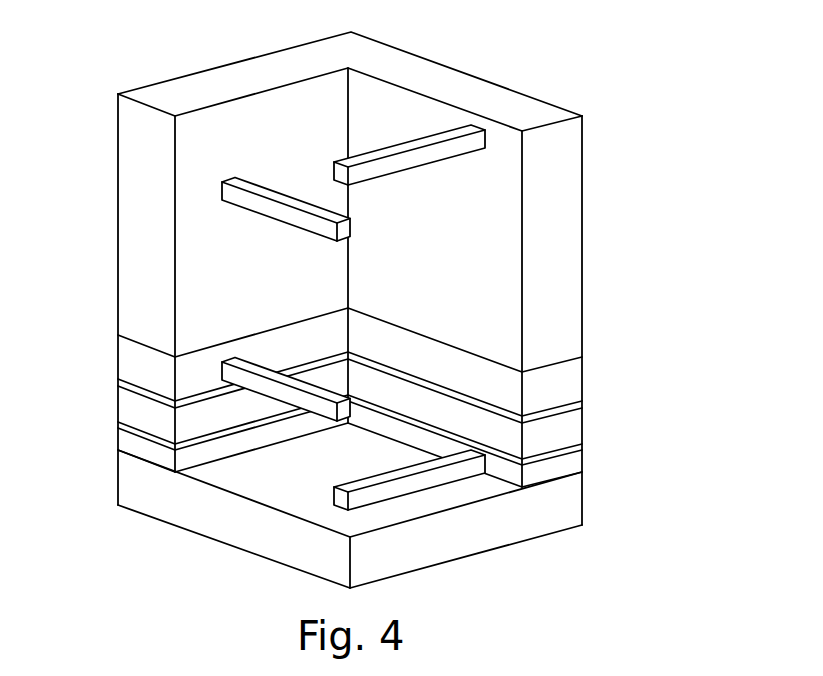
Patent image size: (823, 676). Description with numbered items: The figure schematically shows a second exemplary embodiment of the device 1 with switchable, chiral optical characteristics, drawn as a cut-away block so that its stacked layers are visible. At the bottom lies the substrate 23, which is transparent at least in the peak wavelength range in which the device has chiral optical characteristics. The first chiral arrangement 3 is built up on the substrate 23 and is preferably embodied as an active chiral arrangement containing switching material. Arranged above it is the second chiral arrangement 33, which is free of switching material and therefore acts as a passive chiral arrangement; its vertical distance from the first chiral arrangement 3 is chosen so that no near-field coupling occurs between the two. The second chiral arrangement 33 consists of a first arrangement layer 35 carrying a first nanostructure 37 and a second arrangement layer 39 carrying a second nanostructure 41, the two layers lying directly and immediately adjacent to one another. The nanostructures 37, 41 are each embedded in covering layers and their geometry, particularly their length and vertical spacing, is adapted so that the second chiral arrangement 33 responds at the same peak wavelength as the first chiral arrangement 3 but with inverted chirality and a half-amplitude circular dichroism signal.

The device 1 is at (606, 90).
The first chiral arrangement 3 is at (595, 362).
The substrate 23 is at (460, 543).
The second chiral arrangement 33 is at (595, 115).
The first arrangement layer 35 is at (131, 188).
The first nanostructure 37 is at (243, 181).
The second arrangement layer 39 is at (131, 123).
The second nanostructure 41 is at (435, 153).